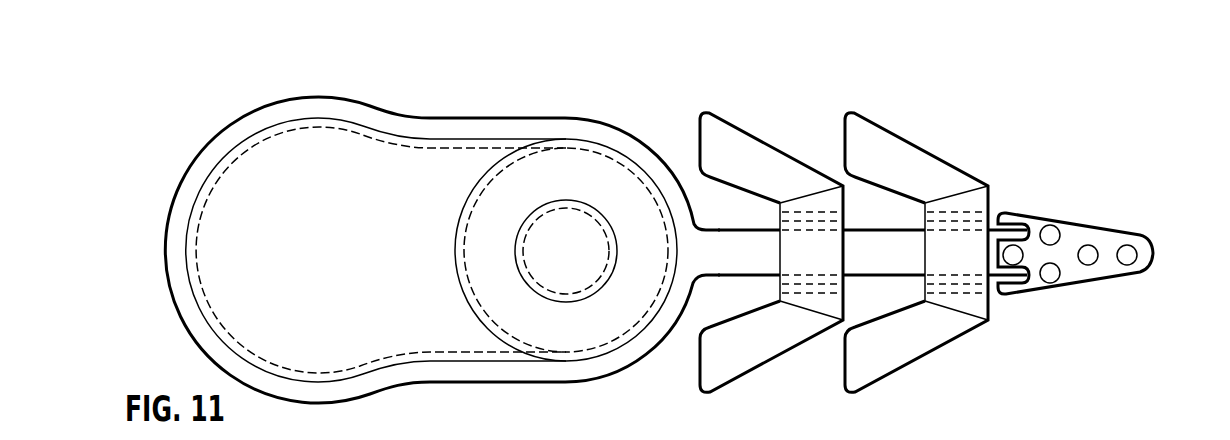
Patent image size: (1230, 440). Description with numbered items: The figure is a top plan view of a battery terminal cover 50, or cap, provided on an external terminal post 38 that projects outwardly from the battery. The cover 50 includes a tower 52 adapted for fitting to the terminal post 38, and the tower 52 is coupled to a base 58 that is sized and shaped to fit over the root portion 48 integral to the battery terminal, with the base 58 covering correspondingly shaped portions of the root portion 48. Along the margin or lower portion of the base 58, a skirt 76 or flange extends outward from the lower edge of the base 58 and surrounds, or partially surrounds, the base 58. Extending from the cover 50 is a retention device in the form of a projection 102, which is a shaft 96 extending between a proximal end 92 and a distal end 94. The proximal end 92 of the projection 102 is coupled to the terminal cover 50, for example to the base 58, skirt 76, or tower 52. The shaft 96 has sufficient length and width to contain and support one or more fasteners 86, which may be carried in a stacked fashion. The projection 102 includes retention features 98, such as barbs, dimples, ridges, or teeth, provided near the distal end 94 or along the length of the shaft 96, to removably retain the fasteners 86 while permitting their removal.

The external terminal post 38 is at (523, 173).
The root portion 48 is at (338, 150).
The battery terminal cover 50 is at (206, 116).
The tower 52 is at (608, 153).
The base 58 is at (295, 157).
The skirt 76 is at (178, 248).
The fasteners 86 is at (778, 330).
The proximal end 92 is at (713, 258).
The distal end 94 is at (1150, 253).
The shaft 96 is at (873, 242).
The retention features 98 is at (1017, 217).
The projection 102 is at (1034, 162).